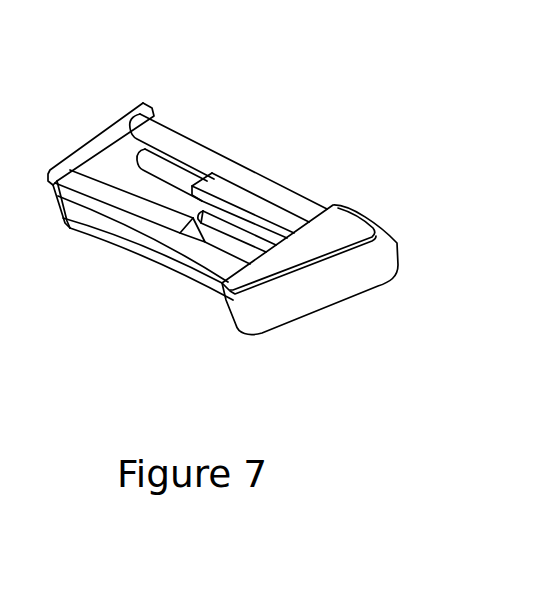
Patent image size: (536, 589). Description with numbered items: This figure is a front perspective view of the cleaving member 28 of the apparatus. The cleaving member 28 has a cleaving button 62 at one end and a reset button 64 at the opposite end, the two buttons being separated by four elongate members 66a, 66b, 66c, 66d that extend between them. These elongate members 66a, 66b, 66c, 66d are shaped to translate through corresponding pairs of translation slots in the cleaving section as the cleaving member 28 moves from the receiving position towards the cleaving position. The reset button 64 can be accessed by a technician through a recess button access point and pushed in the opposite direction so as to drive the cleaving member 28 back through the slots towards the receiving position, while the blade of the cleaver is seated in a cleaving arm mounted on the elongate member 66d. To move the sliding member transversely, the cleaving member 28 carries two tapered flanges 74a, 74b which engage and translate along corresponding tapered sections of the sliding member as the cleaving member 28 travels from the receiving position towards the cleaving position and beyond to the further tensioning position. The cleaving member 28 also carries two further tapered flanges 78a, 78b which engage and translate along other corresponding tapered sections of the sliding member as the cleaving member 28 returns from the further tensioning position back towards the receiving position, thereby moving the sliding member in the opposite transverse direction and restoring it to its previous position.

The cleaving member 28 is at (338, 282).
The cleaving button 62 is at (285, 300).
The reset button 64 is at (70, 160).
The elongate member 66a is at (203, 273).
The elongate member 66b is at (112, 202).
The elongate member 66c is at (173, 137).
The elongate member 66d is at (188, 175).
The tapered flange 74a is at (260, 213).
The tapered flange 74b is at (231, 229).
The tapered flange 78a is at (163, 210).
The tapered flange 78b is at (187, 230).